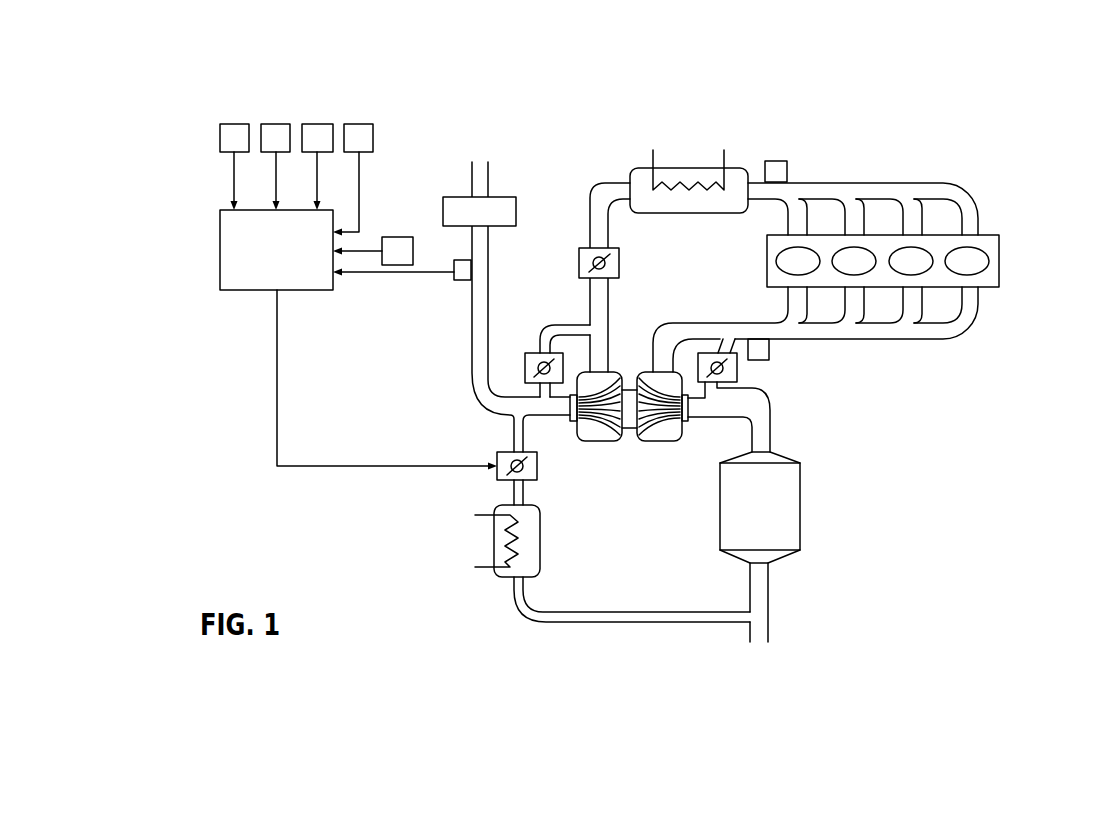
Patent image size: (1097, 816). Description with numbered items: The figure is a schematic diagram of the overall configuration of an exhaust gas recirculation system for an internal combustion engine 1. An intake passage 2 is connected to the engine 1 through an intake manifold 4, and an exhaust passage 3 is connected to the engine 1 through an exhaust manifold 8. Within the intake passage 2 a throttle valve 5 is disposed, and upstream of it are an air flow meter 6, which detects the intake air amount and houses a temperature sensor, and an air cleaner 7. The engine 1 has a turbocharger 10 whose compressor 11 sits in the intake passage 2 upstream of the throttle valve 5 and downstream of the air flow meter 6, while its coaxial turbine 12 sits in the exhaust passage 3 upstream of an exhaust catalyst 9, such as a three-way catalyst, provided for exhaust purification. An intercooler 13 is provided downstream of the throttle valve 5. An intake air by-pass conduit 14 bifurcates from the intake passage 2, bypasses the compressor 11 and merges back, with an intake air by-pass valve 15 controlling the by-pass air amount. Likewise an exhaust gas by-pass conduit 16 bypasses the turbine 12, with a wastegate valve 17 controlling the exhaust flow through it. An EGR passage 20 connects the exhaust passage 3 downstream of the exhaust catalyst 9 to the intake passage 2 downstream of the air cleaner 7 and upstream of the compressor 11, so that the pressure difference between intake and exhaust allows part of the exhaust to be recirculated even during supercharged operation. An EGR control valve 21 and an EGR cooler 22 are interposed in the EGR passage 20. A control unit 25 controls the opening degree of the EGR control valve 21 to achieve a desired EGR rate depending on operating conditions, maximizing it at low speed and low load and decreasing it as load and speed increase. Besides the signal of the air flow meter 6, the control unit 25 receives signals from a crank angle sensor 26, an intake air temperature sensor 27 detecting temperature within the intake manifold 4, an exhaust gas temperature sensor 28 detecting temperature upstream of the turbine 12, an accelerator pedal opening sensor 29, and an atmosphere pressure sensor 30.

The internal combustion engine 1 is at (1012, 306).
The intake passage 2 is at (487, 241).
The exhaust passage 3 is at (765, 440).
The intake manifold 4 is at (935, 186).
The throttle valve 5 is at (616, 263).
The air flow meter 6 is at (463, 278).
The air cleaner 7 is at (500, 200).
The exhaust manifold 8 is at (920, 346).
The exhaust catalyst 9 is at (803, 518).
The turbocharger 10 is at (631, 394).
The compressor 11 is at (598, 438).
The turbine 12 is at (667, 438).
The intercooler 13 is at (735, 170).
The intake air by-pass conduit 14 is at (573, 325).
The intake air by-pass valve 15 is at (528, 357).
The exhaust gas by-pass conduit 16 is at (720, 388).
The wastegate valve 17 is at (736, 368).
The EGR passage 20 is at (593, 618).
The EGR control valve 21 is at (532, 472).
The EGR cooler 22 is at (533, 548).
The control unit 25 is at (222, 265).
The crank angle sensor 26 is at (234, 167).
The intake air temperature sensor 27 is at (790, 136).
The exhaust gas temperature sensor 28 is at (802, 355).
The accelerator pedal opening sensor 29 is at (353, 180).
The atmosphere pressure sensor 30 is at (373, 251).